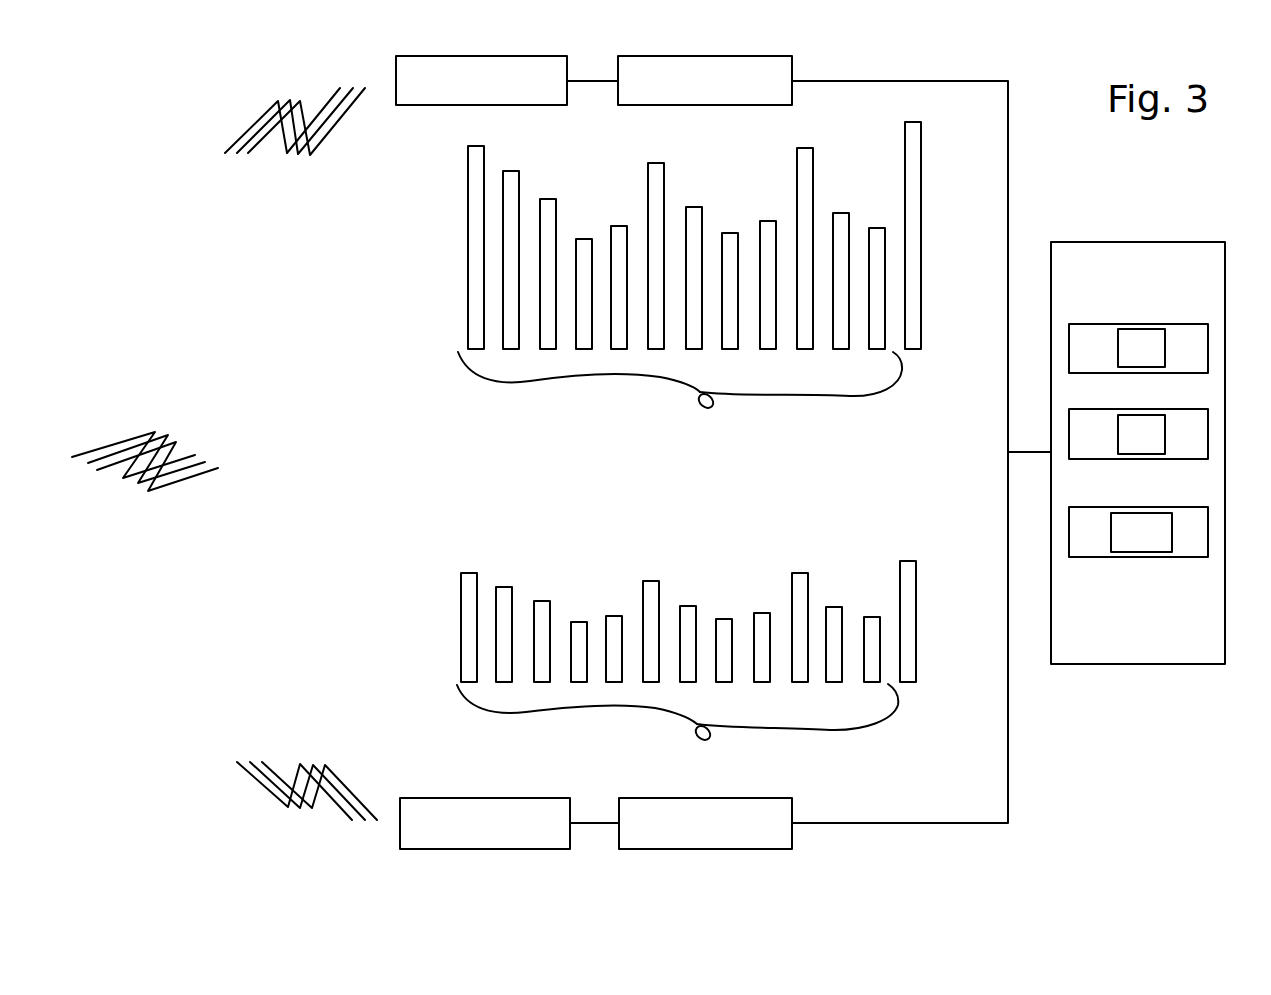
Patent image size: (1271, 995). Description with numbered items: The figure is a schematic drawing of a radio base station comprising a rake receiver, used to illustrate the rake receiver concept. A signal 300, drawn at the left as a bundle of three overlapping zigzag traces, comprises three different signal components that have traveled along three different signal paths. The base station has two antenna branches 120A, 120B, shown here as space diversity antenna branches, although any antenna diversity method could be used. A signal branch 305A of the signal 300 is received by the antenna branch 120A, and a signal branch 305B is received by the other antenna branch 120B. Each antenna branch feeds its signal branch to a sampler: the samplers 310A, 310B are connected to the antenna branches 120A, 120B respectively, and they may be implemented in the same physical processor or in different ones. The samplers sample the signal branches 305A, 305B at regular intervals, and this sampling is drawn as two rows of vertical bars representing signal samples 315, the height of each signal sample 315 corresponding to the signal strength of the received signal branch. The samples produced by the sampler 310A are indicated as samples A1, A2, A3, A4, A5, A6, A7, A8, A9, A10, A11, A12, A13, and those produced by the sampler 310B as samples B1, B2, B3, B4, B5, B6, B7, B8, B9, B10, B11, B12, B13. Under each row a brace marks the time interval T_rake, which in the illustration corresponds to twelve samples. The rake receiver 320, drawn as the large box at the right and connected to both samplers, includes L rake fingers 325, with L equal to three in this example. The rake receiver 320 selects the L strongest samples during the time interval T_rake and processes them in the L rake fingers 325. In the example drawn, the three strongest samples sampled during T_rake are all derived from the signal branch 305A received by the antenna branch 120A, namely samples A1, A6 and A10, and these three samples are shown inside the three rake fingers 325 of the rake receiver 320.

The signal 300 is at (145, 481).
The signal branch 305A is at (295, 153).
The signal branch 305B is at (307, 760).
The antenna branch 120A is at (481, 80).
The antenna branch 120B is at (485, 823).
The sampler 310A is at (705, 80).
The sampler 310B is at (705, 823).
The signal samples 315 is at (678, 425).
The rake receiver 320 is at (1138, 487).
The rake fingers 325 is at (1148, 324).
The sample A1 is at (476, 231).
The sample A2 is at (511, 242).
The sample A3 is at (548, 253).
The sample A4 is at (585, 272).
The sample A5 is at (620, 274).
The sample A6 is at (657, 239).
The sample A7 is at (693, 262).
The sample A8 is at (730, 274).
The sample A9 is at (768, 269).
The sample A10 is at (805, 232).
The sample A11 is at (840, 265).
The sample A12 is at (877, 272).
The sample A13 is at (913, 221).
The sample B1 is at (469, 611).
The sample B2 is at (505, 616).
The sample B3 is at (543, 621).
The sample B4 is at (580, 635).
The sample B5 is at (614, 631).
The sample B6 is at (651, 613).
The sample B7 is at (688, 625).
The sample B8 is at (724, 632).
The sample B9 is at (762, 629).
The sample B10 is at (799, 610).
The sample B11 is at (832, 627).
The sample B12 is at (870, 634).
The sample B13 is at (906, 606).